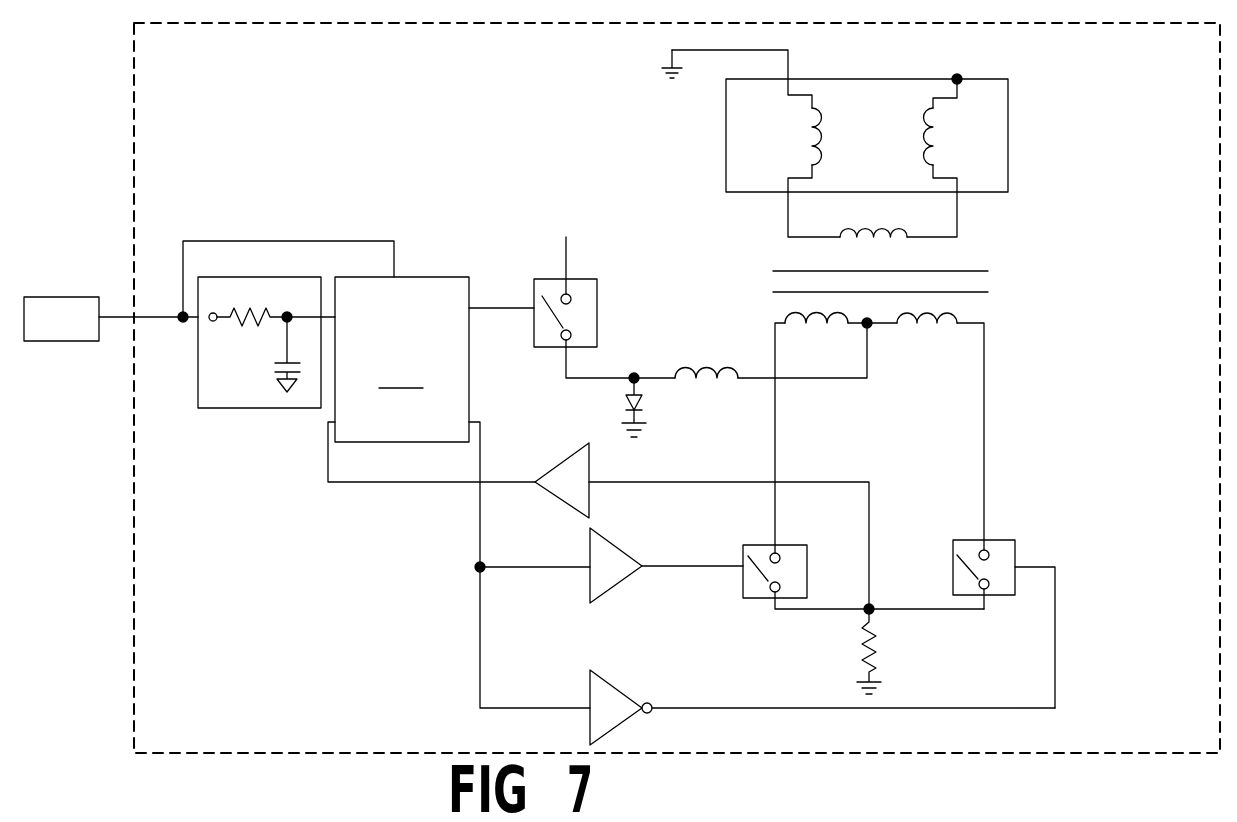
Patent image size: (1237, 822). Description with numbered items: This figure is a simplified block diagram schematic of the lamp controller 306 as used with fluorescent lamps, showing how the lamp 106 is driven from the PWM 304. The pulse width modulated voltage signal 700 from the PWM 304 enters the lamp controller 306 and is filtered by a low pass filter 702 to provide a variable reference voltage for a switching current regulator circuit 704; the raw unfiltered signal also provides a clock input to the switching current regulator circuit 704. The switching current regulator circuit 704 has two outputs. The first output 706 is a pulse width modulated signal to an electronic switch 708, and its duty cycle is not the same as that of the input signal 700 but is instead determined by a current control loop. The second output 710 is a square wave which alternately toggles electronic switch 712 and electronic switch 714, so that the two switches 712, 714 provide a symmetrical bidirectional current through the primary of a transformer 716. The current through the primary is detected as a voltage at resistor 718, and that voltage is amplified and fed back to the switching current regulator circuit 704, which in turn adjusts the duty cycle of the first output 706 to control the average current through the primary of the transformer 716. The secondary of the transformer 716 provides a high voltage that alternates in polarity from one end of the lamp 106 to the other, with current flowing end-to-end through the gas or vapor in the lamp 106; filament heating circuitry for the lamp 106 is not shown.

The lamp 106 is at (898, 144).
The PWM 304 is at (33, 292).
The lamp controller 306 is at (133, 730).
The pulse width modulated voltage signal 700 is at (147, 320).
The low pass filter 702 is at (287, 408).
The switching current regulator circuit 704 is at (459, 492).
The first output 706 is at (513, 305).
The electronic switch 708 is at (598, 333).
The second output 710 is at (482, 462).
The electronic switch 712 is at (808, 543).
The electronic switch 714 is at (1013, 540).
The transformer 716 is at (965, 248).
The resistor 718 is at (887, 653).